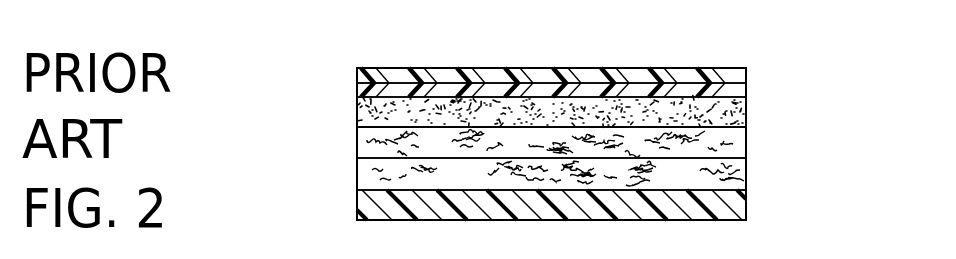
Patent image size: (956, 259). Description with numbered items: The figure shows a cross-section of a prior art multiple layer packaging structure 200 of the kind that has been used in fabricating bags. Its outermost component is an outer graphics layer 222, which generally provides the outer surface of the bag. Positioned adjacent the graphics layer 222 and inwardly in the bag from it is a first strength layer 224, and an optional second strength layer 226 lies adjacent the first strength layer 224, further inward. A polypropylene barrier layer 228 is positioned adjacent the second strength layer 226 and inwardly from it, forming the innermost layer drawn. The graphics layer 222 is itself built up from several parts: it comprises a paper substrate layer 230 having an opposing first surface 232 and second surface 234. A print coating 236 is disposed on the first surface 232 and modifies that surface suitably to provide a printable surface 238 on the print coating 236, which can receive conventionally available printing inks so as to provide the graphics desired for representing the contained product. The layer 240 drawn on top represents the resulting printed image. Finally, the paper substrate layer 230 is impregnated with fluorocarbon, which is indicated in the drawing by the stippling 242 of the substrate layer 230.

The packaging structure 200 is at (708, 49).
The outer graphics layer 222 is at (755, 72).
The first strength layer 224 is at (747, 144).
The second strength layer 226 is at (747, 172).
The polypropylene barrier layer 228 is at (747, 206).
The paper substrate layer 230 is at (357, 110).
The first surface 232 is at (447, 93).
The second surface 234 is at (466, 138).
The print coating 236 is at (357, 89).
The printable surface 238 is at (395, 80).
The printed image 240 is at (357, 76).
The stippling 242 is at (592, 107).